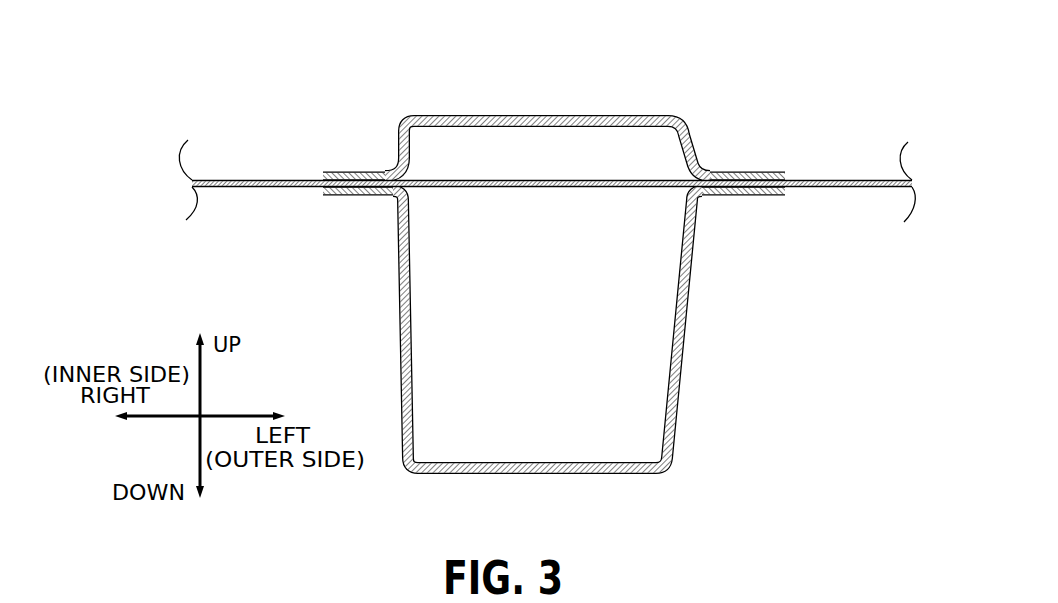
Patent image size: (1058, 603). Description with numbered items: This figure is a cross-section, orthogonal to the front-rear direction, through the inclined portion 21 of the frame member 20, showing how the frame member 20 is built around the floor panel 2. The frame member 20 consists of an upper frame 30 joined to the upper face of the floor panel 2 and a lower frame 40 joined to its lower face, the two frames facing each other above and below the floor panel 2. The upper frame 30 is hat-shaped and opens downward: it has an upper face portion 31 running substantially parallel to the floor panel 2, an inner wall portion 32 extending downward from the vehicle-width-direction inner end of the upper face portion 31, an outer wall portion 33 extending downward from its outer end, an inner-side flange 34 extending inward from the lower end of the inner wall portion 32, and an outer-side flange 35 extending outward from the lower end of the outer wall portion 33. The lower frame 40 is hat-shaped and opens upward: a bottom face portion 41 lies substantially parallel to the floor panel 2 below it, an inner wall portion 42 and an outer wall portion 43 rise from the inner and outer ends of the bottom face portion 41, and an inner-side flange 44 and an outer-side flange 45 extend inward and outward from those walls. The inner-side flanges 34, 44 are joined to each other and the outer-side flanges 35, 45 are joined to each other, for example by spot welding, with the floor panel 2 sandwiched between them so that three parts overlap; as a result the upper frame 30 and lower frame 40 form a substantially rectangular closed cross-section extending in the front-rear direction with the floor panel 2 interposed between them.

The floor panel 2 is at (867, 180).
The frame member 20 is at (758, 320).
The inclined portion 21 is at (549, 278).
The upper frame 30 is at (657, 90).
The upper face portion 31 is at (523, 115).
The inner wall portion 32 is at (393, 147).
The outer wall portion 33 is at (700, 155).
The inner-side flange 34 is at (343, 172).
The outer-side flange 35 is at (748, 172).
The lower frame 40 is at (388, 442).
The bottom face portion 41 is at (540, 475).
The inner wall portion 42 is at (400, 330).
The outer wall portion 43 is at (682, 365).
The inner-side flange 44 is at (352, 196).
The outer-side flange 45 is at (740, 196).